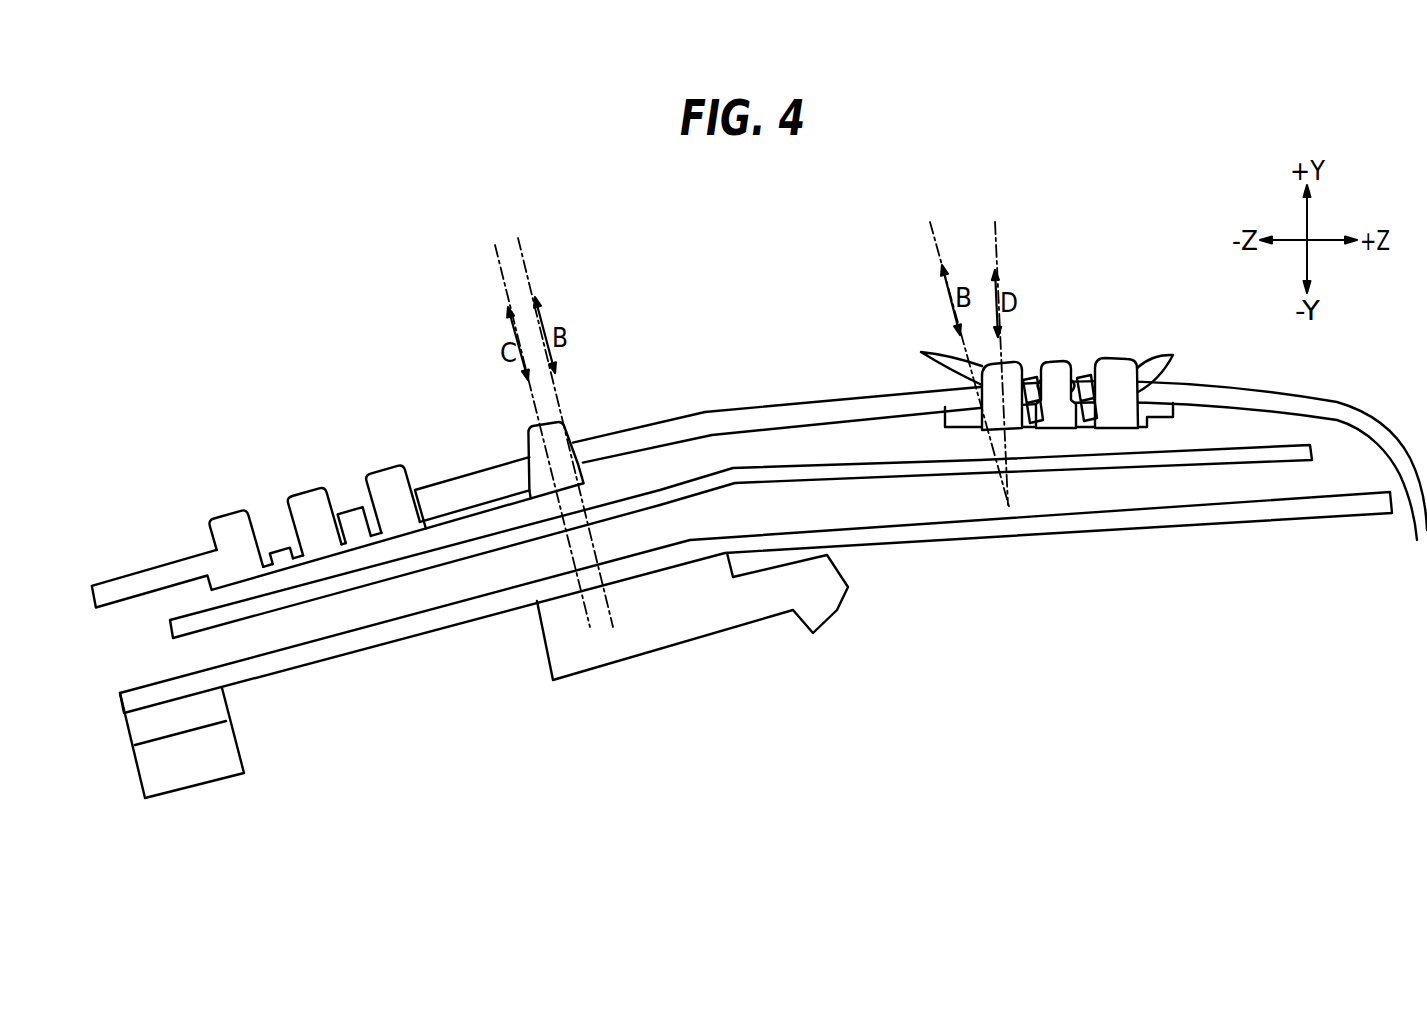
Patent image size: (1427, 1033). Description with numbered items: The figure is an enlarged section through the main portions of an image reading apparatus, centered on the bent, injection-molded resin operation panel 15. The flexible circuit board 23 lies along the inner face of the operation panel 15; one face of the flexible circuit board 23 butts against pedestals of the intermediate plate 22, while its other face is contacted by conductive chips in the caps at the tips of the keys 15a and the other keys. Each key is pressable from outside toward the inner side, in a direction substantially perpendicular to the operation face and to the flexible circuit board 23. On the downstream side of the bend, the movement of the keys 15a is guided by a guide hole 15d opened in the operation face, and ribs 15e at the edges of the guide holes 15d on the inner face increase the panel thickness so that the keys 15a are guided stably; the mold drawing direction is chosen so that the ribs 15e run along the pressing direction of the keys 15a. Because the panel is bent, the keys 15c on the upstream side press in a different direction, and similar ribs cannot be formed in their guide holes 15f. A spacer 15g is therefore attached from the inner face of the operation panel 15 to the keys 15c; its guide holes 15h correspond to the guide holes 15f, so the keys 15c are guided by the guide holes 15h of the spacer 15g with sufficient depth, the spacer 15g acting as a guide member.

The operation panel 15 is at (868, 398).
The keys 15a is at (223, 535).
The keys 15c is at (1110, 357).
The guide hole 15d is at (528, 458).
The ribs 15e is at (523, 497).
The guide holes 15f is at (921, 352).
The spacer 15g is at (1037, 428).
The guide holes 15h is at (1037, 425).
The intermediate plate 22 is at (757, 537).
The flexible circuit board 23 is at (823, 478).